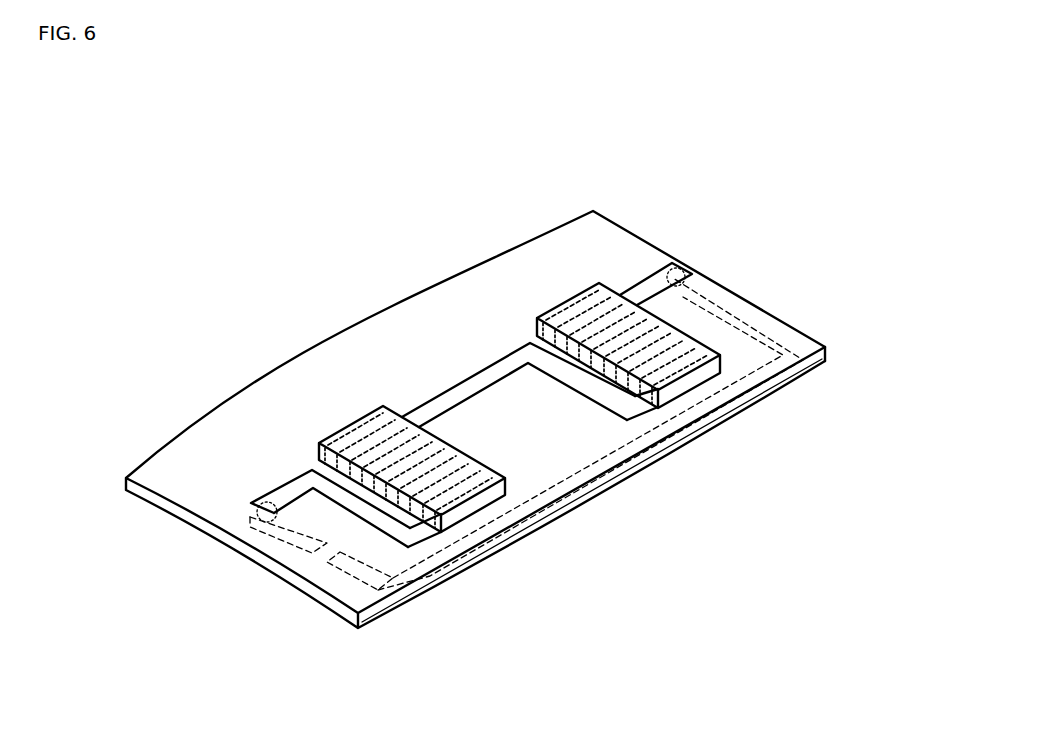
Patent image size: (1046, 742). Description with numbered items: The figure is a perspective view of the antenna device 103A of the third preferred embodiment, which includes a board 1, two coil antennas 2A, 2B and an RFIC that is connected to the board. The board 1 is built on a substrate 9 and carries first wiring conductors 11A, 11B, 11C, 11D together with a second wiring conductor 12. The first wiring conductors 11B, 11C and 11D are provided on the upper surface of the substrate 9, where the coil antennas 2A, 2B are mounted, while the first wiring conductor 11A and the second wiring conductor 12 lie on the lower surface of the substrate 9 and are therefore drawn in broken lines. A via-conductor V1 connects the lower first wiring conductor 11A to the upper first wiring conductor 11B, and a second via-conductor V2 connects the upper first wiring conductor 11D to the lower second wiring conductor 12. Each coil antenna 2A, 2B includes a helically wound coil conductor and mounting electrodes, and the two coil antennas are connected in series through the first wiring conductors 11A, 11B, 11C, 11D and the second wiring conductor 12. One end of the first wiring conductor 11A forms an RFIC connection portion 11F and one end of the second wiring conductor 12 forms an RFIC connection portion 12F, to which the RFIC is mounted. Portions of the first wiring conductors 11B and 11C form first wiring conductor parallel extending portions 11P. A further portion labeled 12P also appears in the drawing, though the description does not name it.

The antenna device 103A is at (808, 157).
The board 1 is at (790, 313).
The substrate 9 is at (827, 344).
The second wiring conductor 12 is at (732, 318).
The side-surface ground electrode 12P is at (723, 418).
The RFIC connection portion 12F is at (341, 575).
The RFIC connection portion 11F is at (296, 549).
The first wiring conductor 11A is at (270, 533).
The via-conductor V1 is at (264, 502).
The via-conductor V2 is at (675, 268).
The first wiring conductor 11B is at (287, 492).
The first wiring conductor 11C is at (475, 387).
The first wiring conductor 11D is at (645, 287).
The first wiring conductor parallel extending portion 11P is at (633, 410).
The coil antenna 2A is at (567, 292).
The coil antenna 2B is at (347, 421).